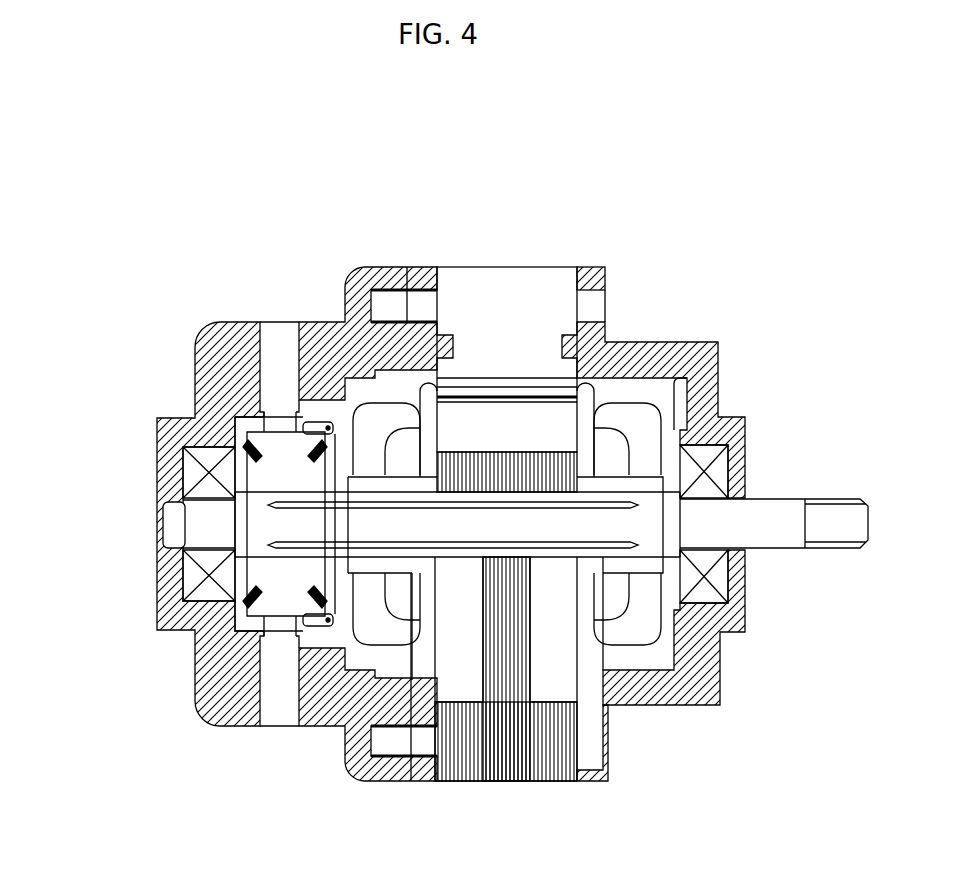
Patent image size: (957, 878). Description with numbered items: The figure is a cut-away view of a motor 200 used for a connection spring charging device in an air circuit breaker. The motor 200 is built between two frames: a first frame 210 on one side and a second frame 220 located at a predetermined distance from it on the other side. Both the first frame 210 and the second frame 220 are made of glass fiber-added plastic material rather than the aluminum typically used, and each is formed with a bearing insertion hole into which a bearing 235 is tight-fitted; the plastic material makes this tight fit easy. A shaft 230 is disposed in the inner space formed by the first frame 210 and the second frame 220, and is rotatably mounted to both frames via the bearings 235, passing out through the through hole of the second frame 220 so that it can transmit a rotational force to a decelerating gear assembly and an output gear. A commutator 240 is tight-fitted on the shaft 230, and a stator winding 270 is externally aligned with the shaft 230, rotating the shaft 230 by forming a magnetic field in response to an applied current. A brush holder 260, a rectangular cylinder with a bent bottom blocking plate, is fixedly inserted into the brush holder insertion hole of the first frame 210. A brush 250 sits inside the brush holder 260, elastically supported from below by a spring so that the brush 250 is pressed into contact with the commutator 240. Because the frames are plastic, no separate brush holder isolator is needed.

The motor 200 is at (84, 151).
The first frame 210 is at (355, 279).
The second frame 220 is at (648, 340).
The shaft 230 is at (647, 520).
The bearing 235 is at (193, 474).
The commutator 240 is at (260, 438).
The brush 250 is at (277, 423).
The brush holder 260 is at (272, 330).
The stator winding 270 is at (392, 402).